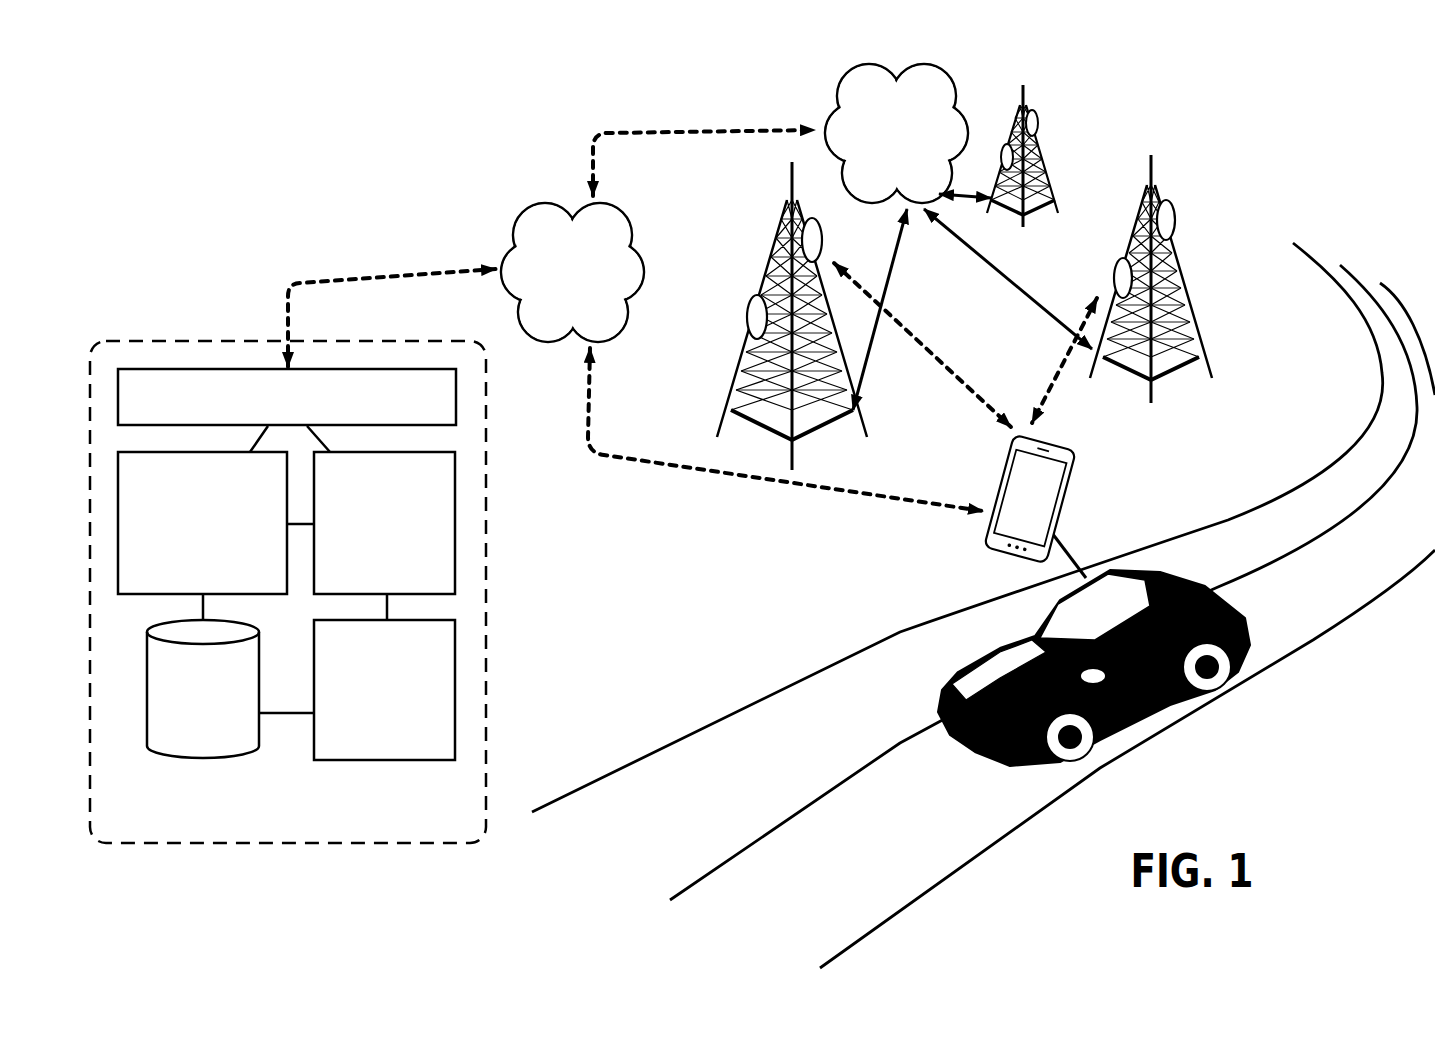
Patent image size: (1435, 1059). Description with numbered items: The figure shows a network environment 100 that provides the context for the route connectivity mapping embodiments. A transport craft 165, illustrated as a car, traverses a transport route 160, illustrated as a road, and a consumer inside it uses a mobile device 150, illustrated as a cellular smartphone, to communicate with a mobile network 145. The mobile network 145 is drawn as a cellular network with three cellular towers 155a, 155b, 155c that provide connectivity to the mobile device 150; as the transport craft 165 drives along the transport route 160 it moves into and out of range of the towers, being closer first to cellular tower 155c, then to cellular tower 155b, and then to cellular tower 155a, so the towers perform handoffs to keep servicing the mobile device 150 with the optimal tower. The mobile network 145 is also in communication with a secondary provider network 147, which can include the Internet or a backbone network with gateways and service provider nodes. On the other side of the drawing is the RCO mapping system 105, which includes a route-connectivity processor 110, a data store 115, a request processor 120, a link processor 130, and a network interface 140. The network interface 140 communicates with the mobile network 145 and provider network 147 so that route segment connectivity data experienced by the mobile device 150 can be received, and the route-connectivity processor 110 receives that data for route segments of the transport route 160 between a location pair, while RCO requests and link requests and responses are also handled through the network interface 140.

The network environment 100 is at (345, 190).
The RCO mapping system 105 is at (288, 592).
The route-connectivity processor 110 is at (202, 523).
The data store 115 is at (203, 689).
The request processor 120 is at (384, 523).
The link processor 130 is at (384, 690).
The network interface 140 is at (287, 397).
The mobile network 145 is at (896, 133).
The provider network 147 is at (572, 272).
The mobile device 150 is at (1035, 506).
The cellular tower 155a is at (791, 199).
The cellular tower 155b is at (1152, 188).
The cellular tower 155c is at (1027, 110).
The transport route 160 is at (1277, 663).
The transport craft 165 is at (1147, 702).